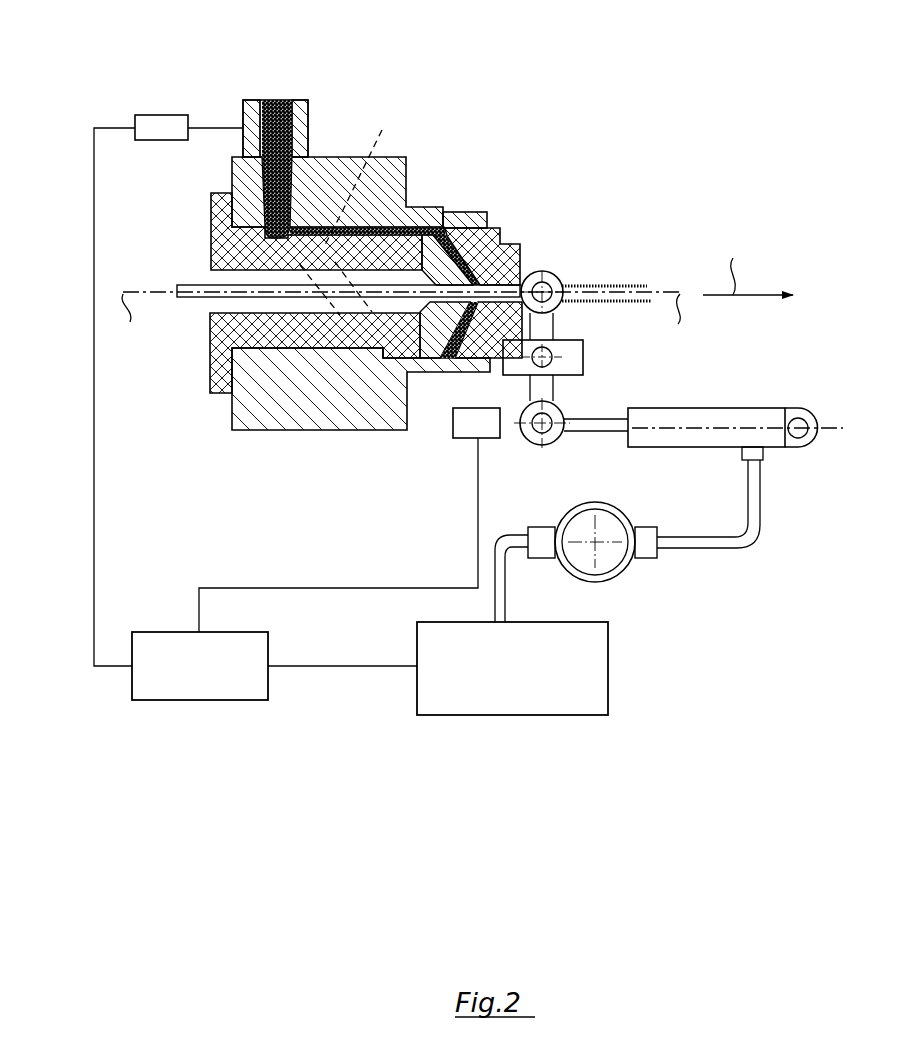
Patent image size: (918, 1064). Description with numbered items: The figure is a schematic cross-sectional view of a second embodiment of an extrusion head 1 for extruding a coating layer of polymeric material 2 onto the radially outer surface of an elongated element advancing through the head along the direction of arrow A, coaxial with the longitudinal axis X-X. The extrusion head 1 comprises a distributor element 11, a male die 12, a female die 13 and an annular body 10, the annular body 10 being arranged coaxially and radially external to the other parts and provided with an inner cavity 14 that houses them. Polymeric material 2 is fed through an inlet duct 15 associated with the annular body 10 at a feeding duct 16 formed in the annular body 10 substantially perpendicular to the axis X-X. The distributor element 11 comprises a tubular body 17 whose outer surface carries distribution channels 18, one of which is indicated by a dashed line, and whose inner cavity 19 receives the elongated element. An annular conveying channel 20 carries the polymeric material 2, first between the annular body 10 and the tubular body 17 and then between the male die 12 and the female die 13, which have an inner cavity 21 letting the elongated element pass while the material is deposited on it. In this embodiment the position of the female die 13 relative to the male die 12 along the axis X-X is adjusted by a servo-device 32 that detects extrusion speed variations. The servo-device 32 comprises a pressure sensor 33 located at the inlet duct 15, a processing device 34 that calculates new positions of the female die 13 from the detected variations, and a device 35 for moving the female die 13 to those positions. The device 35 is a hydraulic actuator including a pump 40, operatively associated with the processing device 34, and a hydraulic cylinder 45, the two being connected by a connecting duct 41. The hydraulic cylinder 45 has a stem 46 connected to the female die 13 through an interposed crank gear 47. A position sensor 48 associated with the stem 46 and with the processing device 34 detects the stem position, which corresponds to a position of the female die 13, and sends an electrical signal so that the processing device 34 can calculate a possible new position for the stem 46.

The extrusion head 1 is at (624, 172).
The polymeric material 2 is at (275, 100).
The annular body 10 is at (232, 177).
The distributor element 11 is at (338, 309).
The male die 12 is at (440, 358).
The female die 13 is at (466, 345).
The inner cavity 14 is at (407, 197).
The inlet duct 15 is at (312, 108).
The feeding duct 16 is at (300, 190).
The tubular body 17 is at (211, 222).
The distribution channels 18 is at (359, 211).
The inner cavity 19 is at (222, 306).
The annular conveying channel 20 is at (443, 231).
The inner cavity 21 is at (493, 237).
The servo-device 32 is at (630, 584).
The pressure sensor 33 is at (160, 115).
The processing device 34 is at (204, 688).
The device for moving the female die 35 is at (656, 593).
The pump 40 is at (596, 687).
The connecting duct 41 is at (736, 548).
The hydraulic cylinder 45 is at (742, 406).
The stem 46 is at (596, 430).
The crank gear 47 is at (590, 358).
The position sensor 48 is at (490, 438).